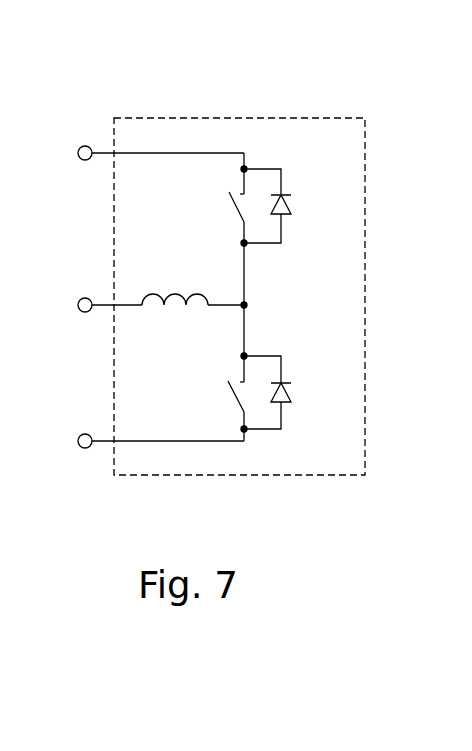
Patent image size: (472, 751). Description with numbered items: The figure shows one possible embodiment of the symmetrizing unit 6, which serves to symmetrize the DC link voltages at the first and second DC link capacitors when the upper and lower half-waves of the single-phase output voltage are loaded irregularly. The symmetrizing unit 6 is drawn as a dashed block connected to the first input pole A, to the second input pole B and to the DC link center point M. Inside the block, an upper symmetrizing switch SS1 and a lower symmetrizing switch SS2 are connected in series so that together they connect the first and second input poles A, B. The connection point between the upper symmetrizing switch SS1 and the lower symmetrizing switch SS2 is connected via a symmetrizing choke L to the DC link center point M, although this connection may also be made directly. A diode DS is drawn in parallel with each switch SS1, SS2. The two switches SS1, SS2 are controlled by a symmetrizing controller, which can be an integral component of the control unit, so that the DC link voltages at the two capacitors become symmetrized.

The symmetrizing unit 6 is at (307, 118).
The first input pole A is at (145, 153).
The DC link center point M is at (94, 305).
The second input pole B is at (145, 441).
The symmetrizing choke L is at (193, 284).
The upper symmetrizing switch SS1 is at (212, 210).
The lower symmetrizing switch SS2 is at (212, 402).
The diode DS is at (287, 299).